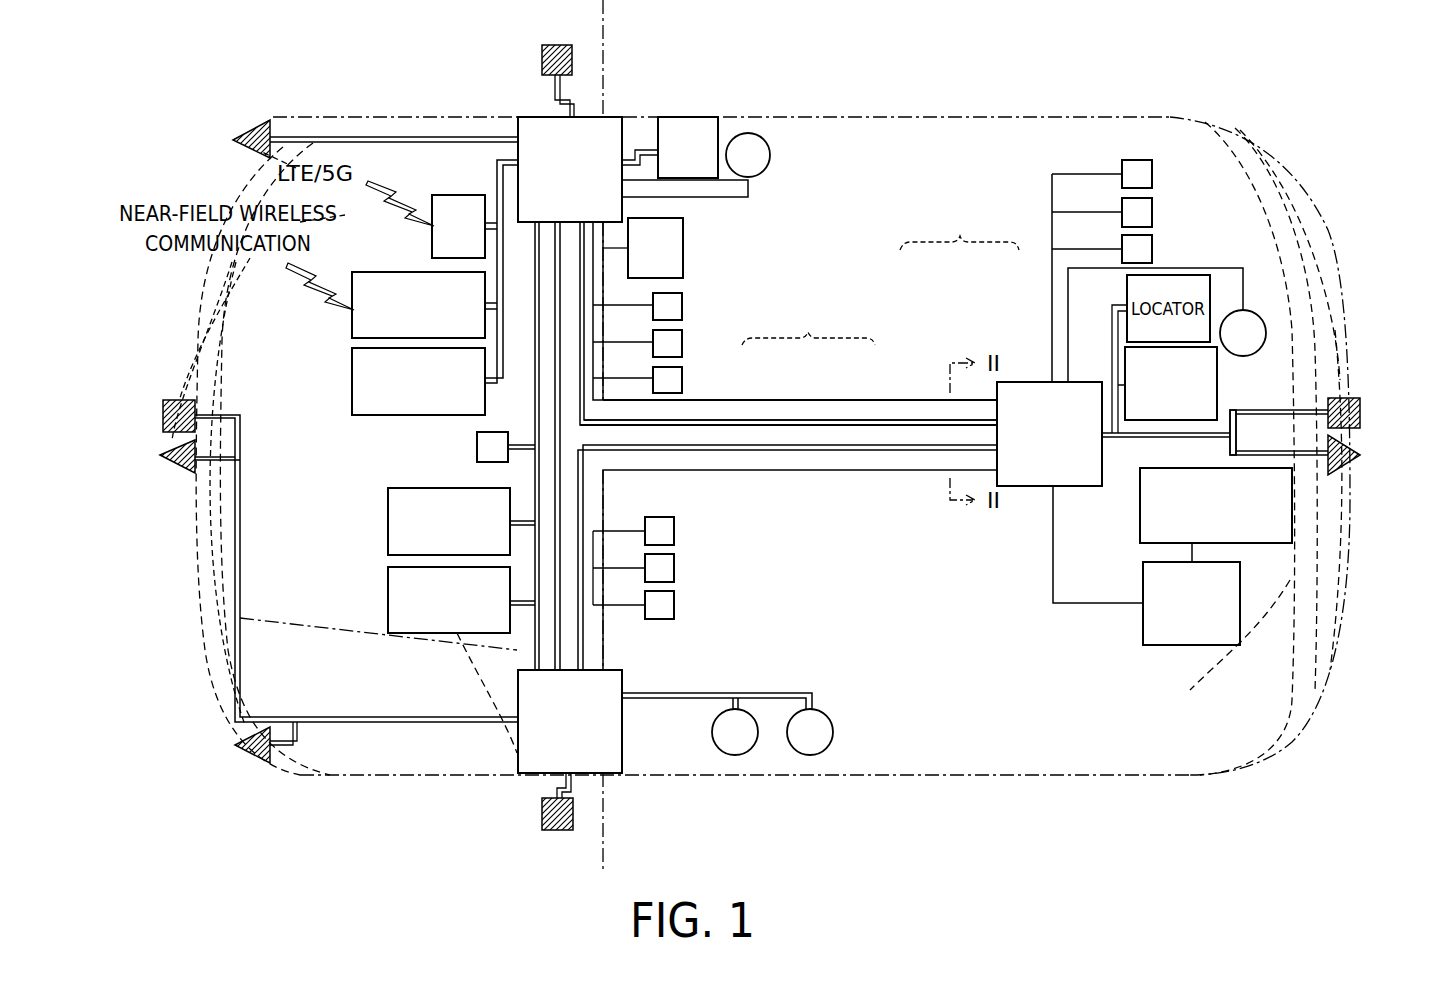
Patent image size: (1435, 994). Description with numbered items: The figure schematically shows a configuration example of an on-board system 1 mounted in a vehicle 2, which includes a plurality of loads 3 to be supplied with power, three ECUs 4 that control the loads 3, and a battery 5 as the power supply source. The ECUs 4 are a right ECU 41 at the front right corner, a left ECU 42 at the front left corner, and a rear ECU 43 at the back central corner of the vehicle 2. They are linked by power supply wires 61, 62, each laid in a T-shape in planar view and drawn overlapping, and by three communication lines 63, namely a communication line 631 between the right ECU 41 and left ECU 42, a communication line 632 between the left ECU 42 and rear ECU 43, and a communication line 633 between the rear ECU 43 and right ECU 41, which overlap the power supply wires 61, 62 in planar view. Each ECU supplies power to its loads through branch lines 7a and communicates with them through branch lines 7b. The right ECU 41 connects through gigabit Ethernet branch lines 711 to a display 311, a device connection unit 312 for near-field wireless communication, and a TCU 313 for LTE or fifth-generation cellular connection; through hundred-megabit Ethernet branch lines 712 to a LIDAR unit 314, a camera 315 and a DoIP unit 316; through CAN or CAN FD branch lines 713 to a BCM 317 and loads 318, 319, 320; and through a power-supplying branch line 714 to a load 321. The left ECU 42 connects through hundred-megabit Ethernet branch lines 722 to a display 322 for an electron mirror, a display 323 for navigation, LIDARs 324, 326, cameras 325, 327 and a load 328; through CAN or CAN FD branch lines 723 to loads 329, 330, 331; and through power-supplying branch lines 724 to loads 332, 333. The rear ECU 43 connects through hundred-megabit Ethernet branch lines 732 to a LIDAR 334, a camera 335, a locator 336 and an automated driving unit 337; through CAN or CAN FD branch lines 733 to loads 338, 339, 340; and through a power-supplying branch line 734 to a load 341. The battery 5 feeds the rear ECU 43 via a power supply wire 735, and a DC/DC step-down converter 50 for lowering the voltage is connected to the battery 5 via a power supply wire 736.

The on-board system 1 is at (1258, 75).
The vehicle 2 is at (1272, 124).
The loads 3 is at (1350, 394).
The ECUs 4 is at (958, 237).
The battery 5 is at (1241, 608).
The branch lines 7a is at (1306, 338).
The branch lines 7b is at (1375, 474).
The right ECU 41 is at (623, 203).
The left ECU 42 is at (624, 688).
The rear ECU 43 is at (1015, 382).
The DC/DC step-down converter 50 is at (1293, 509).
The power supply wire 61 is at (897, 405).
The power supply wire 62 is at (788, 364).
The communication lines 63 is at (806, 330).
The communication line 631 is at (565, 415).
The communication line 632 is at (816, 445).
The communication line 633 is at (860, 420).
The display 311 is at (351, 383).
The device connection unit 312 is at (351, 330).
The TCU 313 is at (431, 240).
The LIDAR unit 314 is at (253, 120).
The camera 315 is at (541, 60).
The DoIP unit 316 is at (688, 116).
The BCM 317 is at (684, 250).
The load 318 is at (683, 307).
The load 319 is at (683, 344).
The load 320 is at (683, 380).
The load 321 is at (771, 152).
The display 322 is at (387, 523).
The display 323 is at (387, 603).
The LIDAR 324 is at (168, 474).
The camera 325 is at (172, 399).
The LIDAR 326 is at (255, 766).
The camera 327 is at (541, 816).
The load 328 is at (476, 448).
The load 329 is at (675, 530).
The load 330 is at (675, 568).
The load 331 is at (675, 605).
The load 332 is at (734, 756).
The load 333 is at (810, 756).
The LIDAR 334 is at (1361, 447).
The camera 335 is at (1361, 411).
The locator 336 is at (1125, 286).
The automated driving unit 337 is at (1218, 385).
The load 338 is at (1153, 176).
The load 339 is at (1153, 214).
The load 340 is at (1153, 251).
The load 341 is at (1258, 316).
The branch lines 711 is at (496, 172).
The branch lines 712 is at (643, 150).
The branch lines 713 is at (607, 292).
The branch line 714 is at (750, 196).
The branch lines 722 is at (557, 787).
The branch lines 723 is at (605, 636).
The branch lines 724 is at (712, 692).
The branch lines 732 is at (1122, 438).
The branch lines 733 is at (1052, 300).
The branch line 734 is at (1238, 267).
The power supply wire 735 is at (1064, 604).
The power supply wire 736 is at (1188, 552).